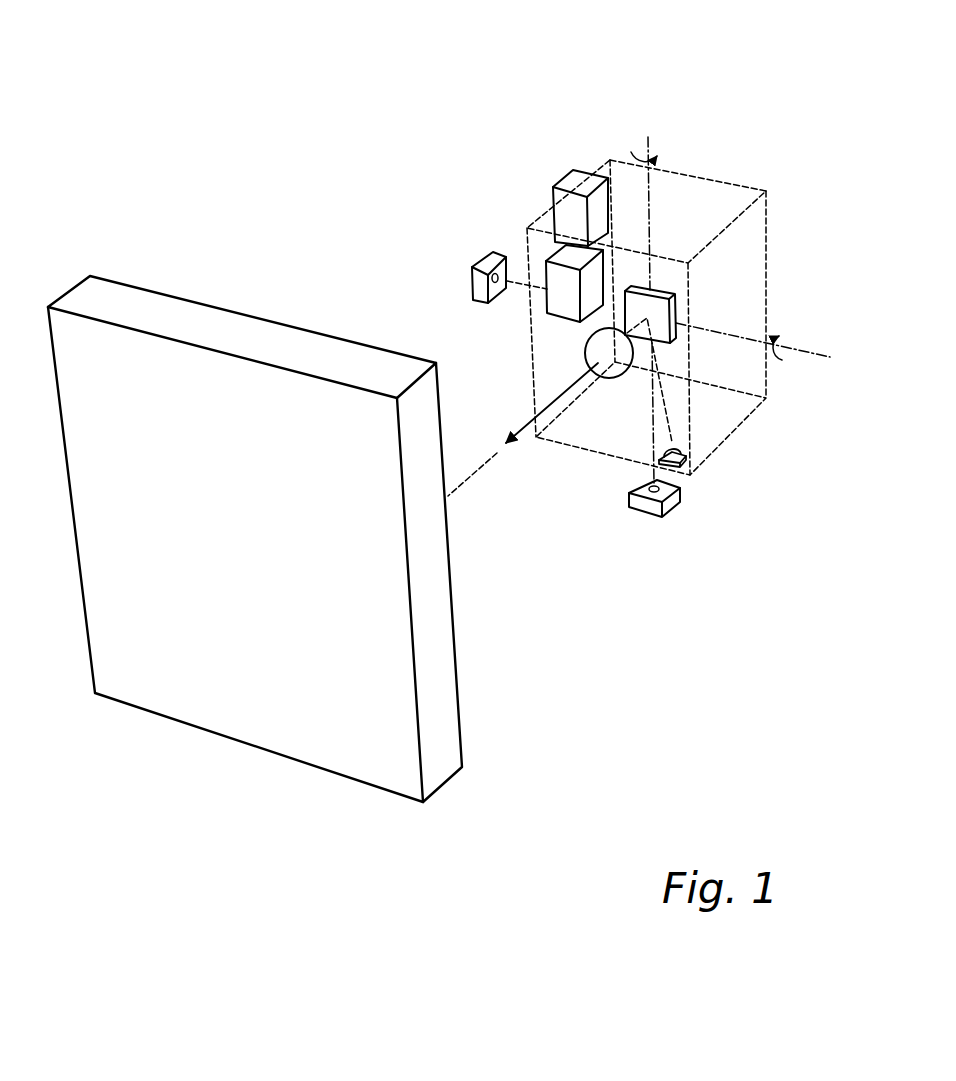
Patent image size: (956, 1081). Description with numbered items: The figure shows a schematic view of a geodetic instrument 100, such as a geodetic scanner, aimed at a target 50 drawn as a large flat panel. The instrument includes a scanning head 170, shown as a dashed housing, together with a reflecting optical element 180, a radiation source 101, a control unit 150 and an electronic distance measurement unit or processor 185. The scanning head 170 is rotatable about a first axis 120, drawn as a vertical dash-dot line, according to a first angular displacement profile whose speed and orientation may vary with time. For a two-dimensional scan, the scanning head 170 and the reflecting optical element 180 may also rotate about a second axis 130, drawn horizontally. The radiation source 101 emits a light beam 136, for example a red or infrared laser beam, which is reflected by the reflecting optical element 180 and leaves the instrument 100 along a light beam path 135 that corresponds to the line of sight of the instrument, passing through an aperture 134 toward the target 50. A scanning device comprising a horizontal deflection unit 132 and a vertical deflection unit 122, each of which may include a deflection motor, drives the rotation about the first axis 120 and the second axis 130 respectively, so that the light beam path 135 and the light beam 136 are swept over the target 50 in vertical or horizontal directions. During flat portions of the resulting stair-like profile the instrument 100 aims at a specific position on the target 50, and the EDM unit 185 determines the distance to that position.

The target 50 is at (445, 700).
The geodetic instrument 100 is at (586, 83).
The radiation source 101 is at (687, 451).
The first axis 120 is at (650, 203).
The vertical deflection unit 122 is at (670, 498).
The second axis 130 is at (808, 352).
The horizontal deflection unit 132 is at (472, 287).
The aperture 134 is at (587, 348).
The light beam path 135 is at (487, 470).
The light beam 136 is at (552, 412).
The control unit 150 is at (567, 187).
The scanning head 170 is at (758, 240).
The reflecting optical element 180 is at (677, 333).
The electronic distance measurement unit 185 is at (542, 270).